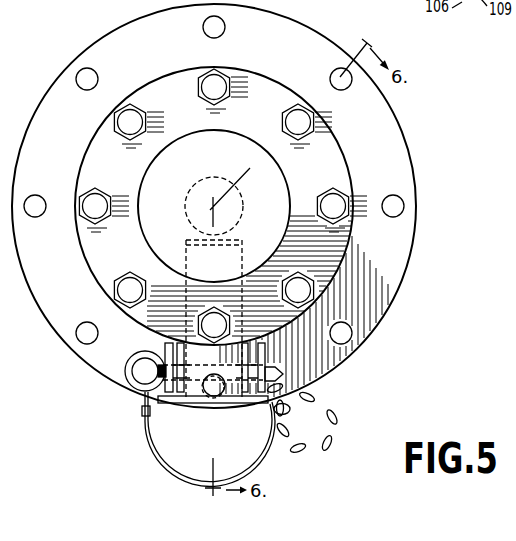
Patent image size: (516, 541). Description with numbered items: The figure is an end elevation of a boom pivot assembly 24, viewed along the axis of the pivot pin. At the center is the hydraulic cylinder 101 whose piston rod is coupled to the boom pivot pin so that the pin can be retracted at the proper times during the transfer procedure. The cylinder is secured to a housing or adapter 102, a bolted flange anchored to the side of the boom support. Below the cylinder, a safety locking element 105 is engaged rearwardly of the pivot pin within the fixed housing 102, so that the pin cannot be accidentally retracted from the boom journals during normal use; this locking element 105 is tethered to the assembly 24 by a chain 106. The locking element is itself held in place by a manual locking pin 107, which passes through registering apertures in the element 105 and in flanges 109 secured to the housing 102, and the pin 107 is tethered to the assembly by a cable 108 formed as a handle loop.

The boom pivot assembly 24 is at (123, 35).
The hydraulic cylinder 101 is at (148, 178).
The housing 102 is at (349, 167).
The safety locking element 105 is at (232, 388).
The chain 106 is at (340, 422).
The manual locking pin 107 is at (283, 376).
The cable 108 is at (155, 451).
The flange 109 is at (174, 351).